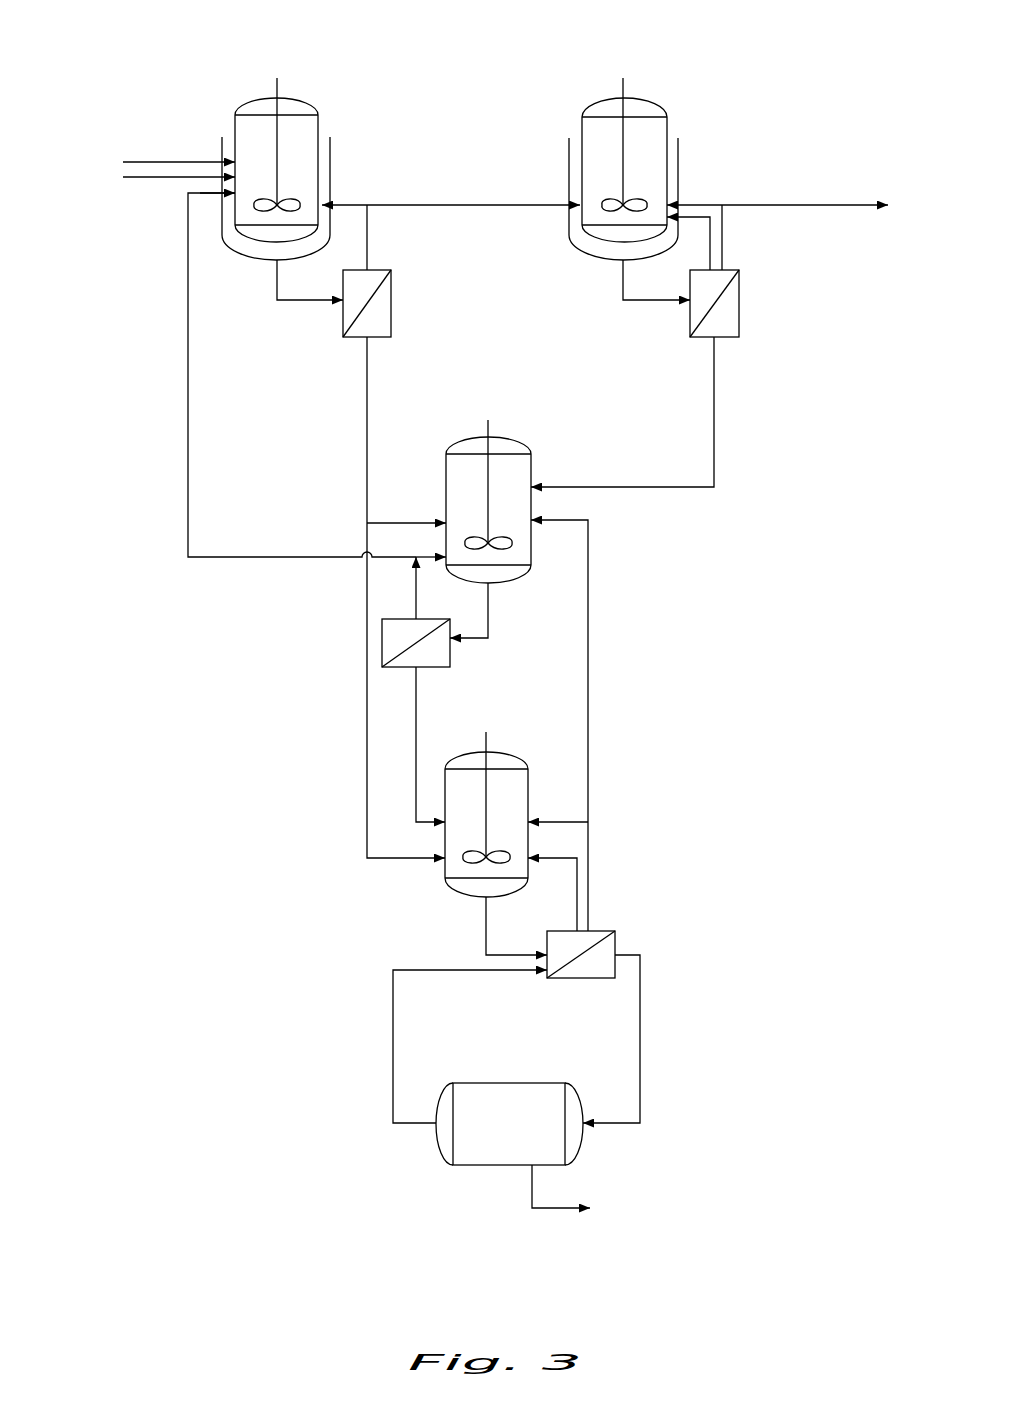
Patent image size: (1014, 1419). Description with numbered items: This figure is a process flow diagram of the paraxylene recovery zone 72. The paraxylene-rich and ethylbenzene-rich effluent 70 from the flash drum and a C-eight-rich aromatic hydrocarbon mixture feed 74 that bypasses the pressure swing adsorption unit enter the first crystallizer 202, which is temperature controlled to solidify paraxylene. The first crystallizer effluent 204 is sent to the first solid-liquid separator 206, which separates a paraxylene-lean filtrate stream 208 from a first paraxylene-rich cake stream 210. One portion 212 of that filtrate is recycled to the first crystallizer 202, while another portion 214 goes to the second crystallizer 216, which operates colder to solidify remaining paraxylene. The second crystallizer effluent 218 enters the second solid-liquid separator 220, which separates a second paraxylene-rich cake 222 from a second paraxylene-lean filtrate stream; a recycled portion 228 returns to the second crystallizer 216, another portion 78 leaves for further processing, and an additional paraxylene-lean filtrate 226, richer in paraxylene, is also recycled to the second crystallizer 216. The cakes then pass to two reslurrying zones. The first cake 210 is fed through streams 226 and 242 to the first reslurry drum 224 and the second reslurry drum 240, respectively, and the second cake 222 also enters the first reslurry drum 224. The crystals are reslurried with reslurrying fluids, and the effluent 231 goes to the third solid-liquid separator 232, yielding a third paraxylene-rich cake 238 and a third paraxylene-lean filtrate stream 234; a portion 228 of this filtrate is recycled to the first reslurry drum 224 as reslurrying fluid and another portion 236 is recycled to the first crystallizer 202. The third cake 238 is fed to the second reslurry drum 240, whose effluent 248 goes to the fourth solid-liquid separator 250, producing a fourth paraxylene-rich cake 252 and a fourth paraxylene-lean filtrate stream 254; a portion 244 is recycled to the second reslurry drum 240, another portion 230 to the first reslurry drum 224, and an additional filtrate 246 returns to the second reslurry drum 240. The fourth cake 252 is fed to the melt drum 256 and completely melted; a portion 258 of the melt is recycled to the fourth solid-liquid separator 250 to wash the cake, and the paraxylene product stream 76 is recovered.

The paraxylene recovery zone 72 is at (145, 45).
The paraxylene-rich and ethylbenzene-rich effluent 70 is at (133, 160).
The C8-rich aromatic hydrocarbon mixture feed 74 is at (153, 180).
The recycle portion of third paraxylene-lean filtrate stream 236 is at (188, 263).
The first crystallizer 202 is at (320, 125).
The recycle portion of paraxylene-lean filtrate stream 212 is at (362, 202).
The portion of paraxylene-lean filtrate stream sent to second crystallizer 214 is at (486, 204).
The paraxylene-lean filtrate stream 208 is at (368, 236).
The first solid-liquid separator 206 is at (393, 291).
The first crystallizer effluent 204 is at (300, 303).
The first paraxylene-rich cake stream 210 is at (368, 363).
The second crystallizer 216 is at (668, 126).
The recycled filtrate portion 228 is at (708, 204).
The paraxylene-lean filtrate portion for further processing 78 is at (800, 204).
The first reslurry drum 224 is at (723, 232).
The additional paraxylene-lean filtrate 226 is at (706, 248).
The second crystallizer effluent 218 is at (642, 303).
The second solid-liquid separator 220 is at (741, 292).
The second paraxylene-rich cake 222 is at (714, 384).
The recycle portion of fourth paraxylene-lean filtrate stream 230 is at (590, 519).
The first reslurry drum effluent 231 is at (490, 597).
The third solid-liquid separator 232 is at (450, 655).
The third paraxylene-lean filtrate stream 234 is at (416, 585).
The third paraxylene-rich cake 238 is at (416, 726).
The second reslurry drum 240 is at (514, 756).
The cake feed stream to second reslurry drum 242 is at (403, 857).
The recycle portion of fourth paraxylene-lean filtrate stream 244 is at (553, 821).
The additional paraxylene-lean filtrate 246 is at (545, 858).
The second reslurry drum effluent 248 is at (503, 953).
The fourth paraxylene-lean filtrate stream 254 is at (589, 880).
The fourth solid-liquid separator 250 is at (617, 945).
The fourth paraxylene-rich cake 252 is at (641, 1006).
The recycled melted paraxylene portion 258 is at (393, 1007).
The melt drum 256 is at (505, 1083).
The paraxylene product stream 76 is at (560, 1212).